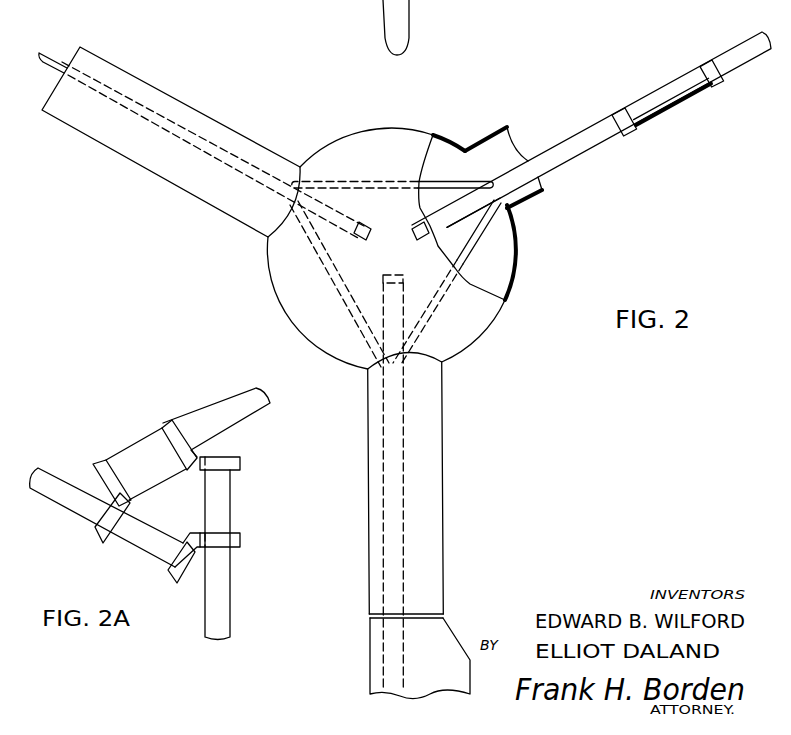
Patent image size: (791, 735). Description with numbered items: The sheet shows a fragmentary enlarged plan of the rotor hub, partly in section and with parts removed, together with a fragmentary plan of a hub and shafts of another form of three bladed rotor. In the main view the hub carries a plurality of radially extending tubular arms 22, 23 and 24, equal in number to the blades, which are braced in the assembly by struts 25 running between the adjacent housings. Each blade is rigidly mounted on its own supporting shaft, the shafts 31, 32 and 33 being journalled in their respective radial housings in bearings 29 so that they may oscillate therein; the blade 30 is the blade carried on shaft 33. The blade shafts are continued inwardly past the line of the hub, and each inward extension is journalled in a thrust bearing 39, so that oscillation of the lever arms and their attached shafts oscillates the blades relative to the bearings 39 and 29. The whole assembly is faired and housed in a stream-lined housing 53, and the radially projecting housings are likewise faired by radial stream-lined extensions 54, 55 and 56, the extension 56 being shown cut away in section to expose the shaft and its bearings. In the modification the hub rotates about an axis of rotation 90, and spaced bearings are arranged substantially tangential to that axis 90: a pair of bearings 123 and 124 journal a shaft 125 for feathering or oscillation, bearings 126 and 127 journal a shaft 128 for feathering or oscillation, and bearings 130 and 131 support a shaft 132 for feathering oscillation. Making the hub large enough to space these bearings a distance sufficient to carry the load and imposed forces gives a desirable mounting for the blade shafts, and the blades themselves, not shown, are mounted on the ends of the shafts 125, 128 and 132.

In FIG. 2, the radially extending tubular arm 22 is at (443, 229).
In FIG. 2, the radially extending tubular arm 23 is at (346, 223).
In FIG. 2, the radially extending tubular arm 24 is at (397, 304).
In FIG. 2, the strut 25 is at (430, 192).
In FIG. 2, the bearing 29 is at (618, 109).
In FIG. 2, the blade 30 is at (380, 666).
In FIG. 2, the supporting shaft 31 is at (742, 53).
In FIG. 2, the supporting shaft 32 is at (50, 53).
In FIG. 2, the supporting shaft 33 is at (388, 636).
In FIG. 2, the thrust bearing 39 is at (357, 237).
In FIG. 2, the stream-lined housing 53 is at (392, 131).
In FIG. 2, the radial stream-lined extension 54 is at (214, 134).
In FIG. 2, the radial stream-lined extension 55 is at (443, 433).
In FIG. 2, the radial stream-lined extension 56 is at (490, 133).
In FIG. 2A, the axis of rotation 90 is at (168, 503).
In FIG. 2A, the bearing 123 is at (100, 463).
In FIG. 2A, the bearing 124 is at (170, 421).
In FIG. 2A, the shaft 125 is at (227, 392).
In FIG. 2A, the bearing 126 is at (242, 458).
In FIG. 2A, the bearing 127 is at (240, 534).
In FIG. 2A, the shaft 128 is at (222, 567).
In FIG. 2A, the bearing 130 is at (168, 577).
In FIG. 2A, the bearing 131 is at (94, 533).
In FIG. 2A, the shaft 132 is at (60, 474).